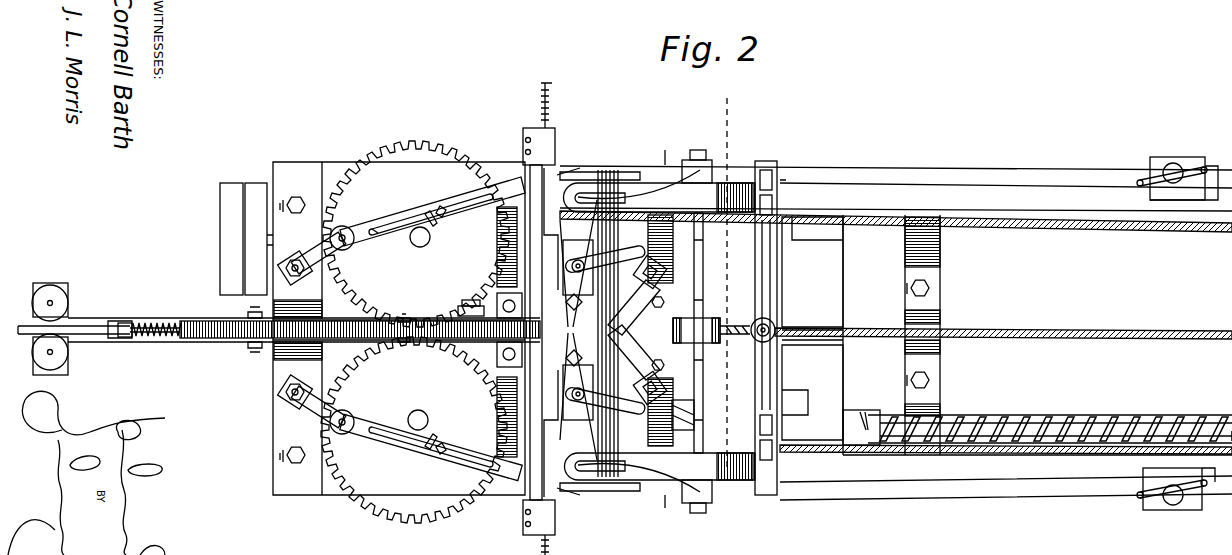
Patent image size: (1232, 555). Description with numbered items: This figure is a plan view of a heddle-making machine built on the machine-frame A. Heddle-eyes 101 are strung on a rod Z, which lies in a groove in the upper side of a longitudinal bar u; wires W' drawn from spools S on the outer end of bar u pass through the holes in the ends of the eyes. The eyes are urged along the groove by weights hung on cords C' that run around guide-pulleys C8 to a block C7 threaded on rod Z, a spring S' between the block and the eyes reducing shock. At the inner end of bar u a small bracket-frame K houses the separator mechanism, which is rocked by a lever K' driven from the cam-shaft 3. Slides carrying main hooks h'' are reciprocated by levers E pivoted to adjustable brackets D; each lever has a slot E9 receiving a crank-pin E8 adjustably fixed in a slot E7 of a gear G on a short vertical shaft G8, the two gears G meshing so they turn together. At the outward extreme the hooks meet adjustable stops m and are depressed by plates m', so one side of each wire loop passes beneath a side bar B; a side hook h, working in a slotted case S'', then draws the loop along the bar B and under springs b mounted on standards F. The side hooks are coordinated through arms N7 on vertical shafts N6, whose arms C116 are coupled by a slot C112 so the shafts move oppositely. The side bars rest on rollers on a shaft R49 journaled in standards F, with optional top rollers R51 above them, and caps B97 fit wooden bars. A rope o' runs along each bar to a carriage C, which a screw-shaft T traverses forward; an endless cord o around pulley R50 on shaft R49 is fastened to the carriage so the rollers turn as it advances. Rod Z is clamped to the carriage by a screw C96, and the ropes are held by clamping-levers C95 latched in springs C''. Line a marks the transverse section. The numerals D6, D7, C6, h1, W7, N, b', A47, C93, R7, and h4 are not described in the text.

The spools S is at (60, 329).
The rod Z is at (22, 336).
The wires W' is at (304, 329).
The block C7 is at (126, 338).
The spring S' is at (157, 315).
The heddle-eyes 101 is at (206, 340).
The bar u is at (170, 340).
The guide-pulleys C8 is at (250, 312).
The metallic caps or end pieces B97 is at (220, 183).
The gear-wheels G is at (415, 332).
The short vertical shaft G8 is at (430, 237).
The levers E is at (398, 225).
The slot E9 is at (378, 232).
The slot E7 is at (442, 206).
The crank-pin E8 is at (432, 474).
The brackets D is at (302, 390).
The nut D6 is at (295, 330).
The pivot D7 is at (302, 408).
The cords C' is at (304, 302).
The screw C6 is at (406, 318).
The rack h1 is at (518, 332).
The lever K' is at (474, 295).
The bracket-frame K is at (509, 324).
The plates m' is at (549, 331).
The adjustable stops m is at (551, 319).
The hooks h'' is at (563, 332).
The side hook h is at (571, 338).
The standards F is at (698, 158).
The slotted case S'' is at (600, 332).
The springs b is at (639, 331).
The plate W7 is at (578, 330).
The arm N7 is at (605, 336).
The pawl N is at (620, 262).
The slot C112 is at (636, 330).
The vertical shaft N6 is at (669, 330).
The arm C116 is at (648, 302).
The top rollers R51 is at (722, 182).
The section line a is at (723, 275).
The clamping-levers C95 is at (768, 170).
The pulley R50 is at (712, 322).
The shaft R49 is at (711, 378).
The latching-springs C'' is at (778, 326).
The machine-frame A is at (960, 167).
The side bars B is at (896, 333).
The rope b' is at (896, 332).
The rope o' is at (1214, 237).
The endless band or cord o is at (1003, 322).
The end fitting A47 is at (1196, 186).
The cam-shaft 3 is at (868, 326).
The carriage C is at (812, 328).
The screw C96 is at (790, 268).
The block C93 is at (861, 418).
The screw-shaft T is at (1078, 418).
The block R7 is at (579, 330).
The link h4 is at (578, 452).